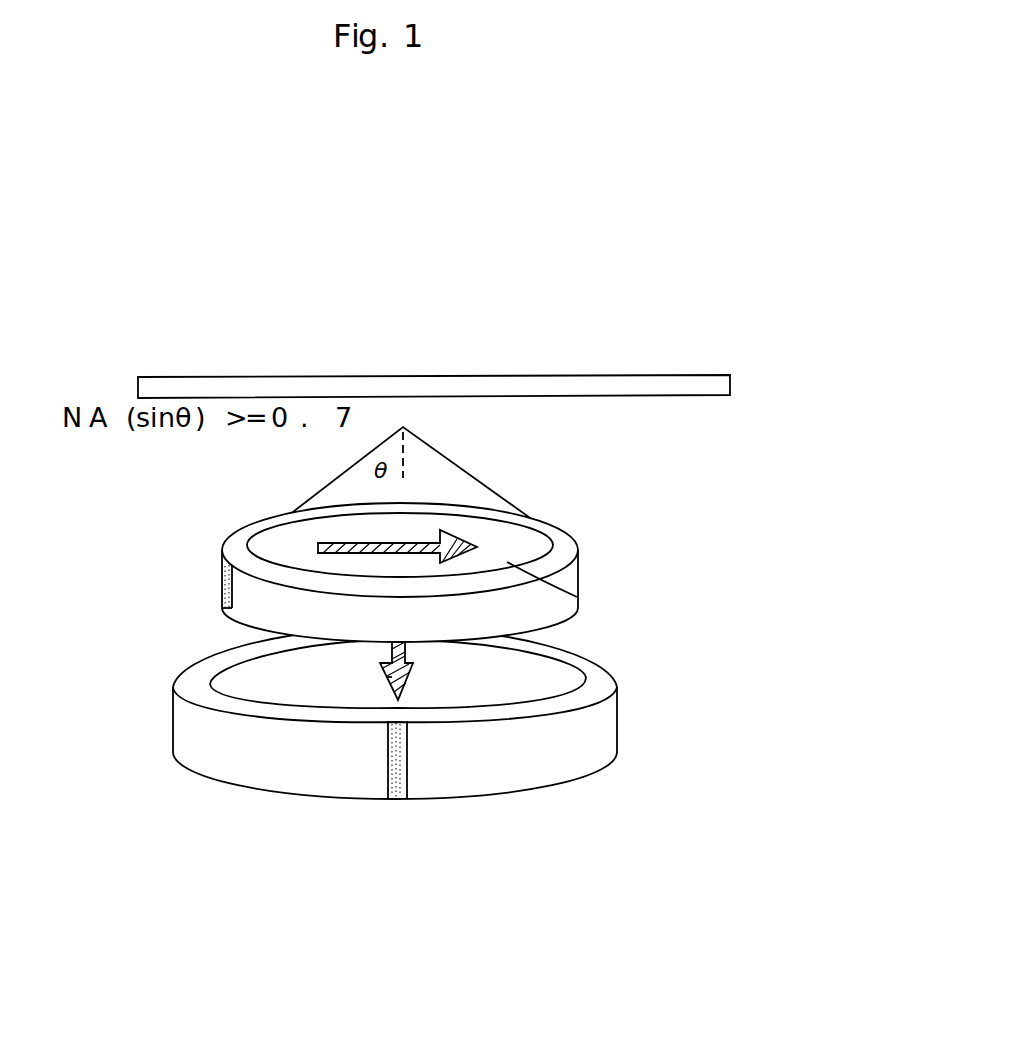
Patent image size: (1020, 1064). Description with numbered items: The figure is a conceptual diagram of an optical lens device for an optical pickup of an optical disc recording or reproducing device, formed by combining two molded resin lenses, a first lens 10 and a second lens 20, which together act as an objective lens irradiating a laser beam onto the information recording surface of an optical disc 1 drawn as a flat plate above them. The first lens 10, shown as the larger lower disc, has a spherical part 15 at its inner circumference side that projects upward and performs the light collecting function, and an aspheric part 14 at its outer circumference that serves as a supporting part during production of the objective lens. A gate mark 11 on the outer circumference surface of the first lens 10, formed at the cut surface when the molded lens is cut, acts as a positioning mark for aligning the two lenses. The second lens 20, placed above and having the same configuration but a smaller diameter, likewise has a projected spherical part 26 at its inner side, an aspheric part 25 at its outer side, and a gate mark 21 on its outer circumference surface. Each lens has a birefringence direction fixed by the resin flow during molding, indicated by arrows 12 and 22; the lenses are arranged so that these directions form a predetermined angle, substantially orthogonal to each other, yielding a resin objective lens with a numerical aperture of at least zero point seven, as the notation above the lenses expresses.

The optical disc 1 is at (620, 375).
The first lens 10 is at (618, 720).
The gate mark 11 is at (392, 800).
The birefringence direction arrow 12 is at (390, 677).
The aspheric part 14 is at (563, 708).
The spherical part 15 is at (480, 686).
The second lens 20 is at (578, 570).
The gate mark 21 is at (220, 580).
The birefringence direction arrow 22 is at (223, 603).
The aspheric part 25 is at (568, 533).
The spherical part 26 is at (577, 597).